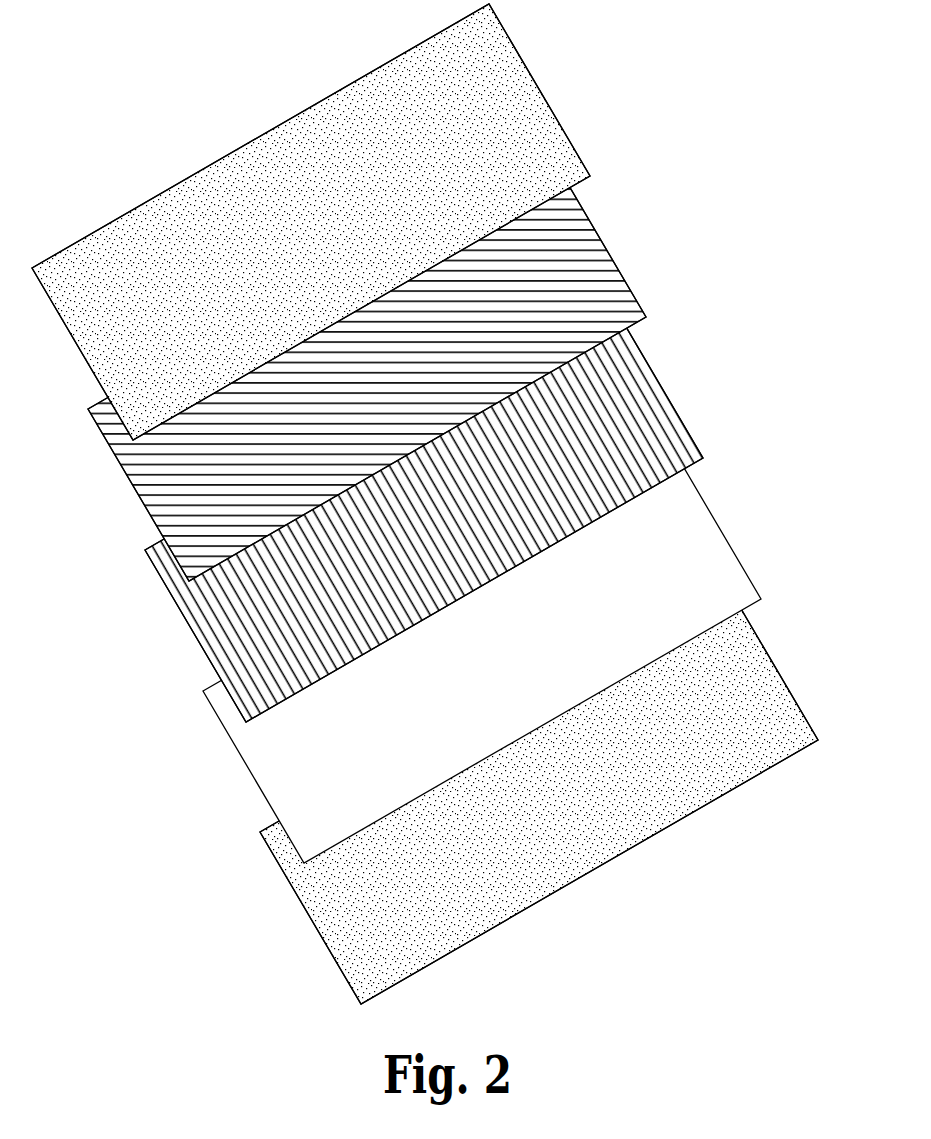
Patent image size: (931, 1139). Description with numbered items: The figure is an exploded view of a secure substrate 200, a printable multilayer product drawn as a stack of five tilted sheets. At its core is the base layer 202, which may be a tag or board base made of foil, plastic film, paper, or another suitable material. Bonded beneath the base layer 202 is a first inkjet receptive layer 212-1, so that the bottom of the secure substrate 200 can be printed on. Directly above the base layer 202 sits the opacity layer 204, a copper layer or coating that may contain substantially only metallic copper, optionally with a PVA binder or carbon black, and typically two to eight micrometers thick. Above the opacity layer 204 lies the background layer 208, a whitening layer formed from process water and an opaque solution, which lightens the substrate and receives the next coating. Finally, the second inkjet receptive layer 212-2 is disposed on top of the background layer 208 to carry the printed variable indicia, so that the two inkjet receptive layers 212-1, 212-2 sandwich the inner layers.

The secure substrate 200 is at (437, 504).
The second inkjet receptive layer 212-2 is at (522, 100).
The background layer 208 is at (580, 253).
The opacity layer 204 is at (643, 397).
The base layer 202 is at (693, 527).
The first inkjet receptive layer 212-1 is at (767, 677).